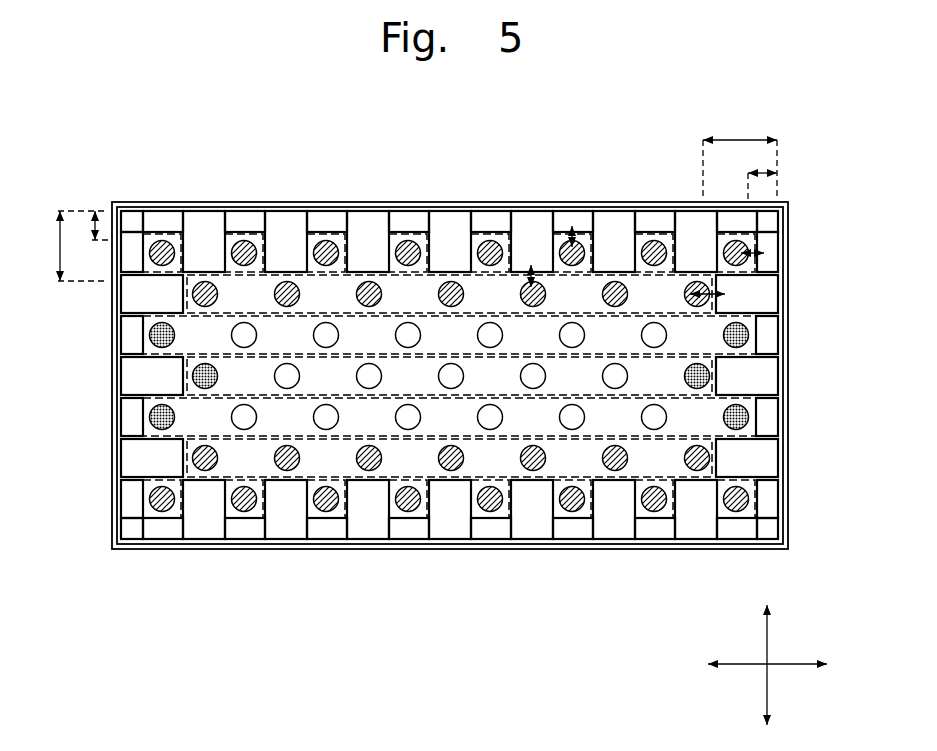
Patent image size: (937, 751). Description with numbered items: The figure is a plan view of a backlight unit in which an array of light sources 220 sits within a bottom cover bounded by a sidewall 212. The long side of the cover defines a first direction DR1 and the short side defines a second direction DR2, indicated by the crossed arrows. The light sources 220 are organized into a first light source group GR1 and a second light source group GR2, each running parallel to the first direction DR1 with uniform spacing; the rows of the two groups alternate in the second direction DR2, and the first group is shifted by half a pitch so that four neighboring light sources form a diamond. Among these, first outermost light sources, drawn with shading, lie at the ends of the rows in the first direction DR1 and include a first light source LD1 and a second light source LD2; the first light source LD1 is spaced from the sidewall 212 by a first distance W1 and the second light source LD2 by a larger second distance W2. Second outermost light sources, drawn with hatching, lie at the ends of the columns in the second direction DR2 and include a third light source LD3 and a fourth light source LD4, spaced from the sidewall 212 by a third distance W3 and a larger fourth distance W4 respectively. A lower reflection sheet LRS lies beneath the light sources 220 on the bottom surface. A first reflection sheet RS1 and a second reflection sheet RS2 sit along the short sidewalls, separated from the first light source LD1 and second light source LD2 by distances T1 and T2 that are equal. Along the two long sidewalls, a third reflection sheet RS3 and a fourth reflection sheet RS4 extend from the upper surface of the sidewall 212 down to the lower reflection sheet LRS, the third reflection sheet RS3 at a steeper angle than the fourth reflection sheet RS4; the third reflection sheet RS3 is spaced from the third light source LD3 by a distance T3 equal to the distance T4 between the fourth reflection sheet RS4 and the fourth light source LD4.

The light sources 220 is at (166, 232).
The sidewall 212 is at (783, 497).
The first reflection sheet RS1 is at (763, 417).
The second reflection sheet RS2 is at (772, 461).
The third reflection sheet RS3 is at (250, 222).
The fourth reflection sheet RS4 is at (293, 222).
The lower reflection sheet LRS is at (425, 510).
The first light source group GR1 is at (405, 235).
The second light source group GR2 is at (322, 242).
The first light source LD1 is at (737, 243).
The second light source LD2 is at (693, 277).
The third light source LD3 is at (243, 257).
The fourth light source LD4 is at (290, 290).
The distance between first reflection sheet and first light source T1 is at (760, 240).
The distance between second reflection sheet and second light source T2 is at (717, 311).
The distance between third reflection sheet and third light source T3 is at (588, 230).
The distance between fourth reflection sheet and fourth light source T4 is at (523, 276).
The first distance W1 is at (762, 174).
The second distance W2 is at (740, 156).
The third distance W3 is at (85, 225).
The fourth distance W4 is at (69, 246).
The first direction DR1 is at (790, 665).
The second direction DR2 is at (767, 652).